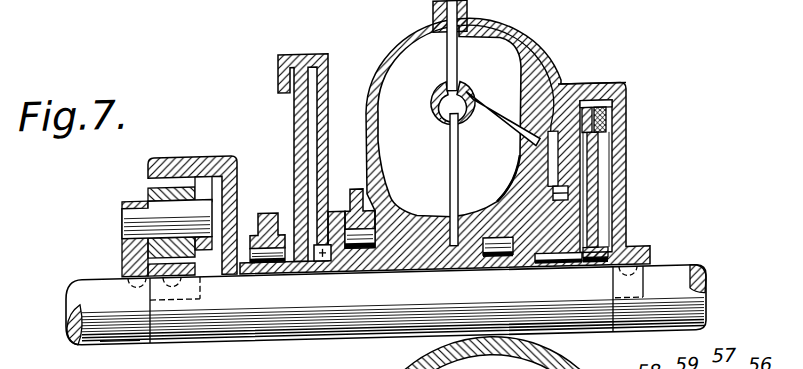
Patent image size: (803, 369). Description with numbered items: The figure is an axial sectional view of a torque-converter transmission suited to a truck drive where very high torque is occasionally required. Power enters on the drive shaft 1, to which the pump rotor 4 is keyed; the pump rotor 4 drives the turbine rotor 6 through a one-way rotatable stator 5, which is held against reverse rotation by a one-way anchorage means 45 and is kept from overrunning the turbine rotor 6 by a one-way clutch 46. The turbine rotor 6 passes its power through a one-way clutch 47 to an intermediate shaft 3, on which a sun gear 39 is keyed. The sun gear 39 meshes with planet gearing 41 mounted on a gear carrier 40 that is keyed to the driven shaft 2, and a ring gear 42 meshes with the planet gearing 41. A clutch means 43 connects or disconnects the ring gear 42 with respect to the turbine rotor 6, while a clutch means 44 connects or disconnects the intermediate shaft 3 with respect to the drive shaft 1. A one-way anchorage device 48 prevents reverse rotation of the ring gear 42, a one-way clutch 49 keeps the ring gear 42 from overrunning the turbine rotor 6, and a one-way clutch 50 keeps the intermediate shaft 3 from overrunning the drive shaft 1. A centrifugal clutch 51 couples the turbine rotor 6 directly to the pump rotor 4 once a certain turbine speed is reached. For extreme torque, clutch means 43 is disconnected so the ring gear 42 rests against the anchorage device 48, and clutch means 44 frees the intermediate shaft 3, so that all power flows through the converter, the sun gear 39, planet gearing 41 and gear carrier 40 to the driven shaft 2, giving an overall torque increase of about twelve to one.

The drive shaft 1 is at (675, 272).
The driven shaft 2 is at (130, 329).
The intermediate shaft 3 is at (272, 331).
The pump rotor 4 is at (427, 69).
The stator 5 is at (480, 160).
The turbine rotor 6 is at (507, 105).
The sun gear 39 is at (199, 272).
The gear carrier 40 is at (122, 236).
The planet gearing 41 is at (178, 185).
The ring gear 42 is at (163, 152).
The clutch means 43 is at (283, 57).
The clutch means 44 is at (618, 121).
The one-way anchorage means 45 is at (342, 207).
The one-way clutch 46 is at (500, 260).
The one-way clutch 47 is at (552, 268).
The one-way anchorage device 48 is at (262, 210).
The one-way clutch 49 is at (330, 259).
The one-way clutch 50 is at (588, 213).
The centrifugal clutch 51 is at (553, 202).